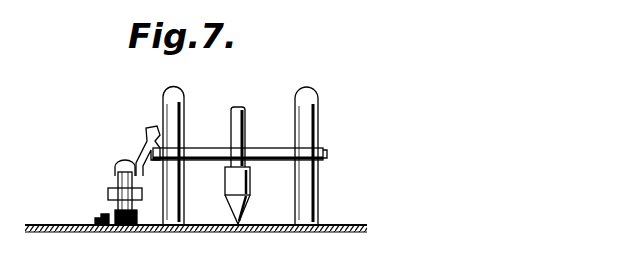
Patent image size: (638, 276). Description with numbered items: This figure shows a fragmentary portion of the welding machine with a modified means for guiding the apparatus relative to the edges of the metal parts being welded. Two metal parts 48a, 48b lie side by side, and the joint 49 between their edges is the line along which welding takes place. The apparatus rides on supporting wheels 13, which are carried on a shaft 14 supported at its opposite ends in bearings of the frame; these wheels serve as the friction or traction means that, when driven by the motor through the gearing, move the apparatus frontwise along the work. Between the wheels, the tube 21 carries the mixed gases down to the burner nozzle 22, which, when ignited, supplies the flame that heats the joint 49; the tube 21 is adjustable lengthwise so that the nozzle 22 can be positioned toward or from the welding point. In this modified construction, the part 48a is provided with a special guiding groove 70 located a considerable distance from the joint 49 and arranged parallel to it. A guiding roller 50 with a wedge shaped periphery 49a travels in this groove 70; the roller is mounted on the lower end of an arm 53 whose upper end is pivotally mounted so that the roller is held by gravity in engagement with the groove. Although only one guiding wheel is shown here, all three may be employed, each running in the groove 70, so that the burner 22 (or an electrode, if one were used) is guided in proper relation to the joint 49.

The supporting wheels 13 is at (170, 92).
The shaft 14 is at (269, 152).
The tube 21 is at (231, 117).
The burner nozzle 22 is at (250, 194).
The metal part 48a is at (137, 232).
The metal part 48b is at (312, 232).
The joint 49 is at (238, 226).
The wedge shaped periphery 49a is at (122, 163).
The guiding roller 50 is at (116, 180).
The arm 53 is at (145, 145).
The guiding groove 70 is at (110, 217).